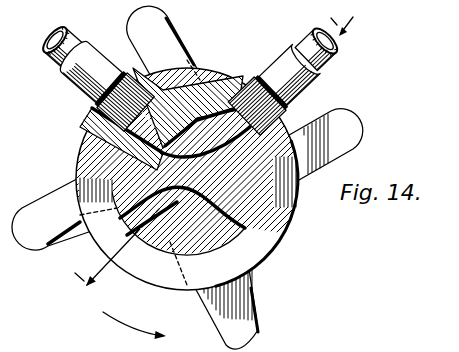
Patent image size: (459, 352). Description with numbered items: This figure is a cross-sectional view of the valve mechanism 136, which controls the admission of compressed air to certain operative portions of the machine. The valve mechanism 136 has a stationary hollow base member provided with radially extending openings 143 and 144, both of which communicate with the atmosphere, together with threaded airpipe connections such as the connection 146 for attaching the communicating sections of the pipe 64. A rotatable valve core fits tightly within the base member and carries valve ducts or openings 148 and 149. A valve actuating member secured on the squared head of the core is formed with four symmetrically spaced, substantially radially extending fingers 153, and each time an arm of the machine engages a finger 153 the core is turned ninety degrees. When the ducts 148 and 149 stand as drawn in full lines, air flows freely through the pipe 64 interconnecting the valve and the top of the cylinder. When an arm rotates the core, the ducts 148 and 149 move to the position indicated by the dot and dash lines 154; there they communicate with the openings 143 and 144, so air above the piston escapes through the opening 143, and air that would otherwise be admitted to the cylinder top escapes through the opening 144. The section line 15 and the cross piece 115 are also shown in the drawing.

The section line 15- 15 is at (213, 154).
The pipe 64 is at (73, 27).
The cross head 115 is at (80, 122).
The valve mechanism 136 is at (258, 265).
The radially extending opening 143 is at (135, 236).
The radially extending opening 144 is at (256, 234).
The threaded airpipe connection 146 is at (243, 77).
The valve duct 148 is at (181, 127).
The valve duct 149 is at (170, 247).
The finger 153 is at (172, 27).
The dot and dash lines 154 is at (135, 186).